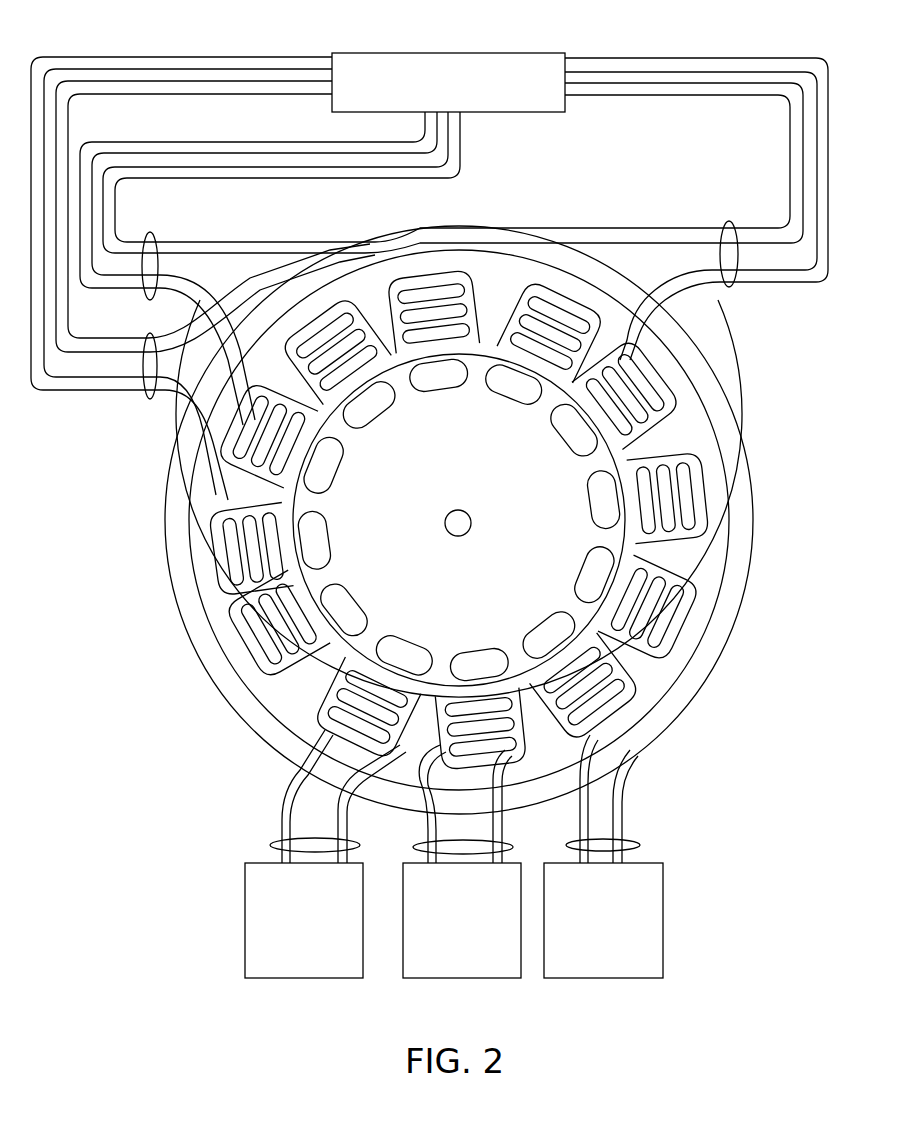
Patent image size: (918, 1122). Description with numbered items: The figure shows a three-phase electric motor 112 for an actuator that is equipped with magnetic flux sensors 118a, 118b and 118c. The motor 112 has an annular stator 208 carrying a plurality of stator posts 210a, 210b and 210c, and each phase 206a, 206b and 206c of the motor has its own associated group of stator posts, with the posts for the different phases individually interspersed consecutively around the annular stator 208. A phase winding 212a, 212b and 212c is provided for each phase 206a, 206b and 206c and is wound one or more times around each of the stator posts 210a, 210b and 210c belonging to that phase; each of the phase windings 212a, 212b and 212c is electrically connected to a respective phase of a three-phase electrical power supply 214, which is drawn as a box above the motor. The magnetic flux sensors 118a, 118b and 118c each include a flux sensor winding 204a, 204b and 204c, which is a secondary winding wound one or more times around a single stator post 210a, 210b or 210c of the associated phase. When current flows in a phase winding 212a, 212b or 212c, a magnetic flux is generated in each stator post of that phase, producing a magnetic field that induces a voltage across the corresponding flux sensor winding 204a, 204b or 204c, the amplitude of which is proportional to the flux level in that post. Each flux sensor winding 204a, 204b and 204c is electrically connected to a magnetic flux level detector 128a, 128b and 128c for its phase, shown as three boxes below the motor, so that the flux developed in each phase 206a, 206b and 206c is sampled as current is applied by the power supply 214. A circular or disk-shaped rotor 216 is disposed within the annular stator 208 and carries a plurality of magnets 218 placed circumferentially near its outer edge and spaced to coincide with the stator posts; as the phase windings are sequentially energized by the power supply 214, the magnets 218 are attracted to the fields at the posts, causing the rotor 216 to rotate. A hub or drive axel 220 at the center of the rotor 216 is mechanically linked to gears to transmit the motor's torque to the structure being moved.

The three-phase electric motor 112 is at (504, 520).
The magnetic flux sensor 118a is at (385, 685).
The magnetic flux sensor 118b is at (480, 690).
The magnetic flux sensor 118c is at (563, 665).
The magnetic flux level detector 128a is at (245, 921).
The magnetic flux level detector 128b is at (462, 978).
The magnetic flux level detector 128c is at (663, 921).
The flux sensor winding 204a is at (270, 845).
The flux sensor winding 204b is at (413, 848).
The flux sensor winding 204c is at (640, 845).
The phase 206a is at (115, 394).
The phase 206b is at (168, 230).
The phase 206c is at (720, 295).
The annular stator 208 is at (198, 670).
The stator post 210a is at (312, 532).
The stator post 210b is at (322, 462).
The stator post 210c is at (372, 390).
The phase winding 212a is at (150, 399).
The phase winding 212b is at (150, 300).
The phase winding 212c is at (729, 222).
The three-phase electrical power supply 214 is at (455, 53).
The rotor 216 is at (459, 522).
The magnets 218 is at (562, 440).
The hub or drive axel 220 is at (471, 522).